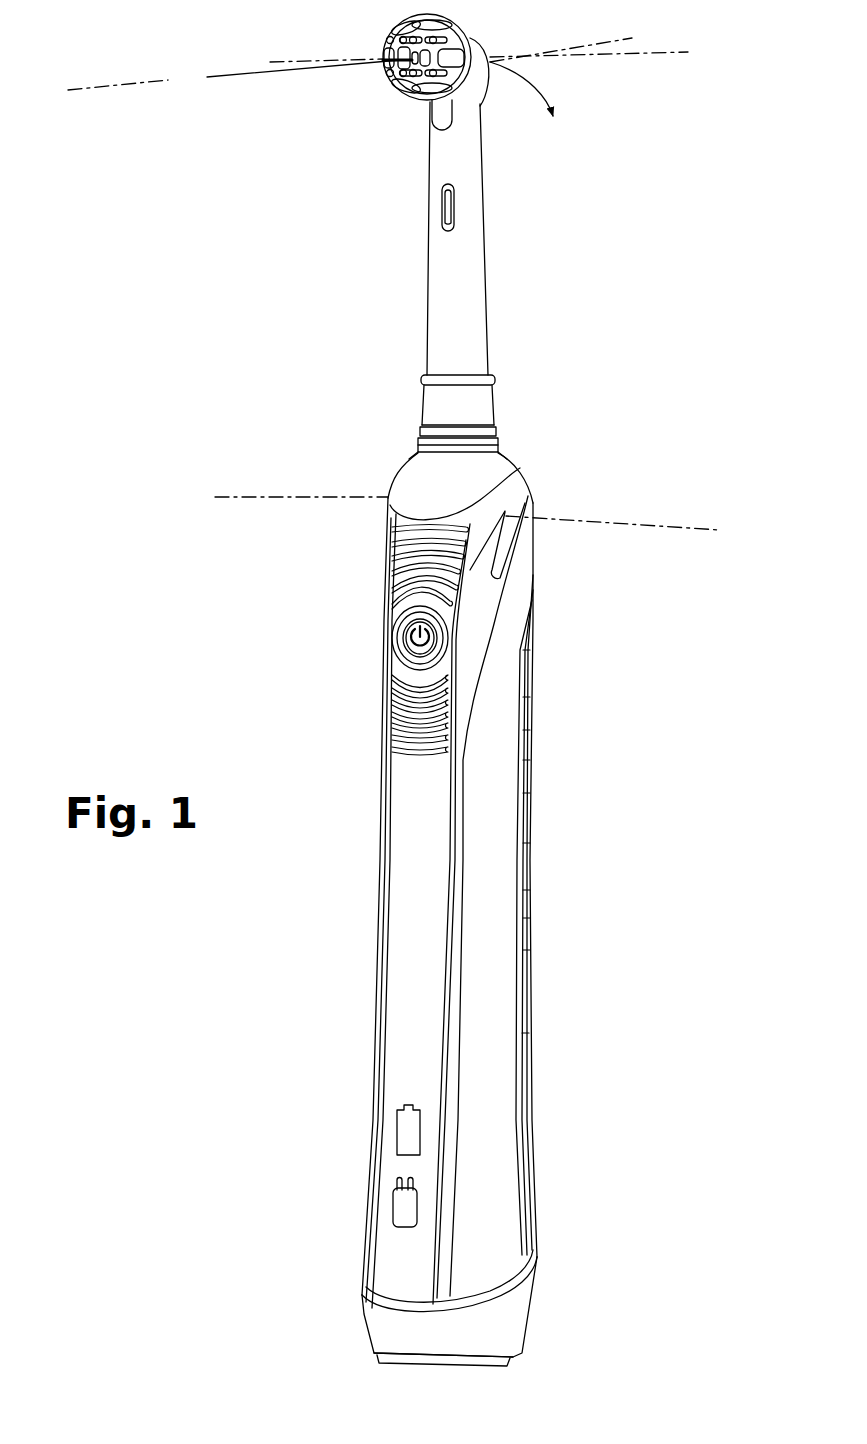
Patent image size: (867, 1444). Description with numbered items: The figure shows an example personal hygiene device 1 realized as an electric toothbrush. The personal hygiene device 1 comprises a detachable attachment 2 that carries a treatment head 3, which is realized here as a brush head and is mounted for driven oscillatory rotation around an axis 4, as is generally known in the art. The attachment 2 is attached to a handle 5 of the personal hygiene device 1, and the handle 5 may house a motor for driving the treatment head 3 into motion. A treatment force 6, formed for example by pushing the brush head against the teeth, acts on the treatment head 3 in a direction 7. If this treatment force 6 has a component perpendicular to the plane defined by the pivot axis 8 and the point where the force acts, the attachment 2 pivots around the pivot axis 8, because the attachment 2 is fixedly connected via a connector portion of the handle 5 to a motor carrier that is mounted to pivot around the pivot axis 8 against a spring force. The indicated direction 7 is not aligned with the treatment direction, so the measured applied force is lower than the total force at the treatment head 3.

The personal hygiene device 1 is at (128, 553).
The attachment 2 is at (556, 184).
The treatment head 3 is at (378, 30).
The axis 4 is at (287, 62).
The handle 5 is at (496, 872).
The treatment force 6 is at (252, 78).
The direction 7 is at (118, 84).
The pivot axis 8 is at (265, 497).